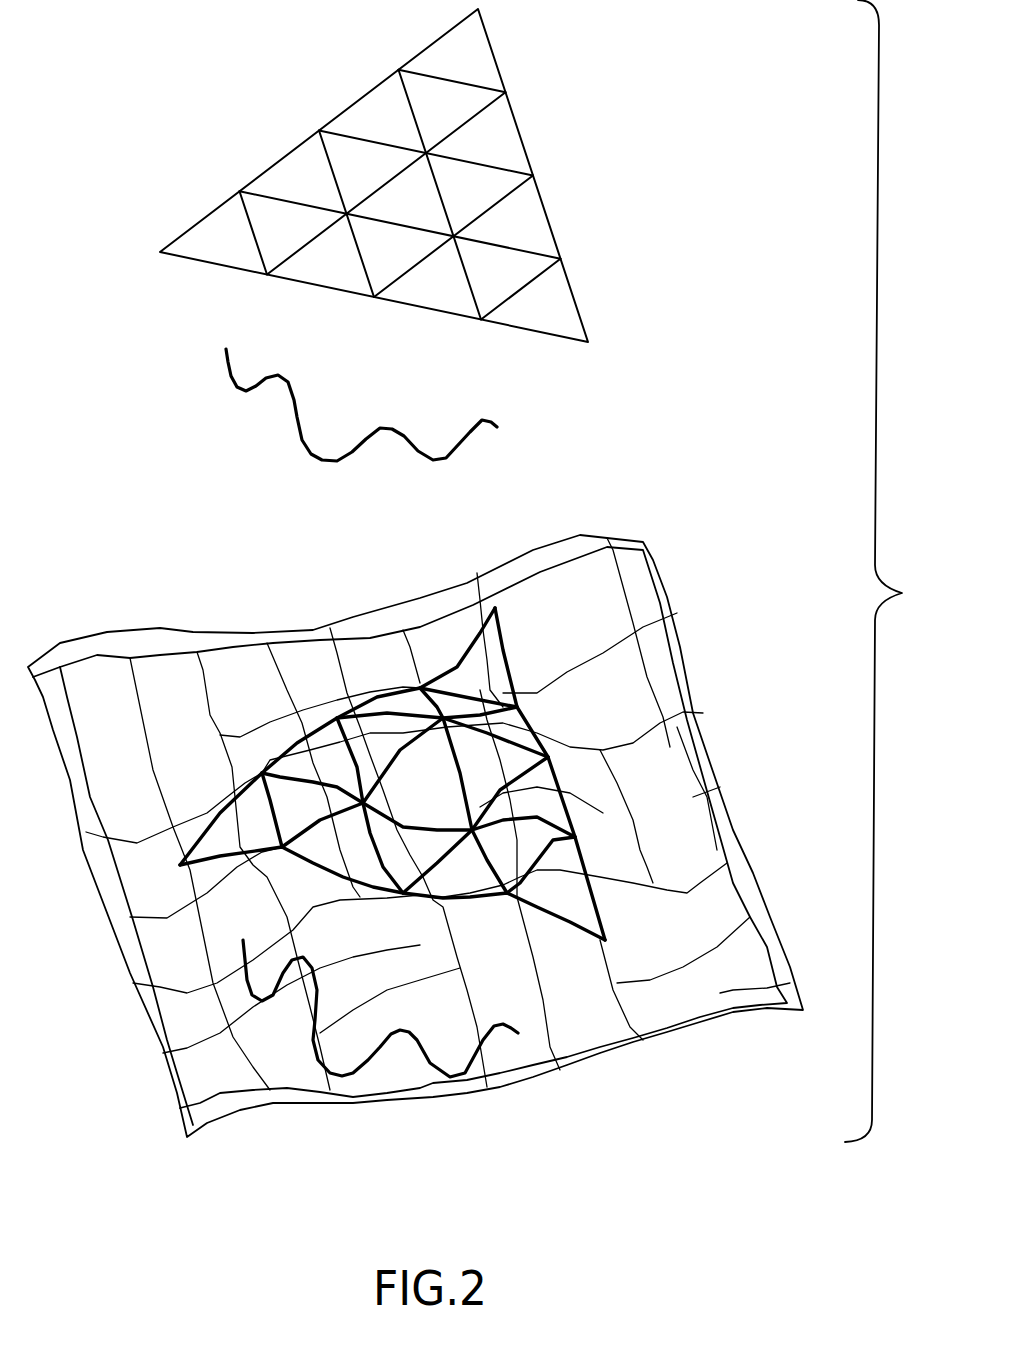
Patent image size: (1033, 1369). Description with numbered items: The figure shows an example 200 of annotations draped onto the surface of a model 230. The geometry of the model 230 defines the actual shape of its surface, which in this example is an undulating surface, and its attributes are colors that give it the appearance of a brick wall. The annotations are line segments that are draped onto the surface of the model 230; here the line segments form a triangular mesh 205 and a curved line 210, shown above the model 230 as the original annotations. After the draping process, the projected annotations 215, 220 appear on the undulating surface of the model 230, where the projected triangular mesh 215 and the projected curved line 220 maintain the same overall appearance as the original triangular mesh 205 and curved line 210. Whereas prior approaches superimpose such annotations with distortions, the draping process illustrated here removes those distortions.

The example of annotations draped onto the surface of a model 200 is at (700, 85).
The triangular mesh 205 is at (285, 155).
The curved line 210 is at (233, 387).
The projected annotation 215 is at (313, 727).
The projected annotation 220 is at (177, 1053).
The model 230 is at (710, 1037).